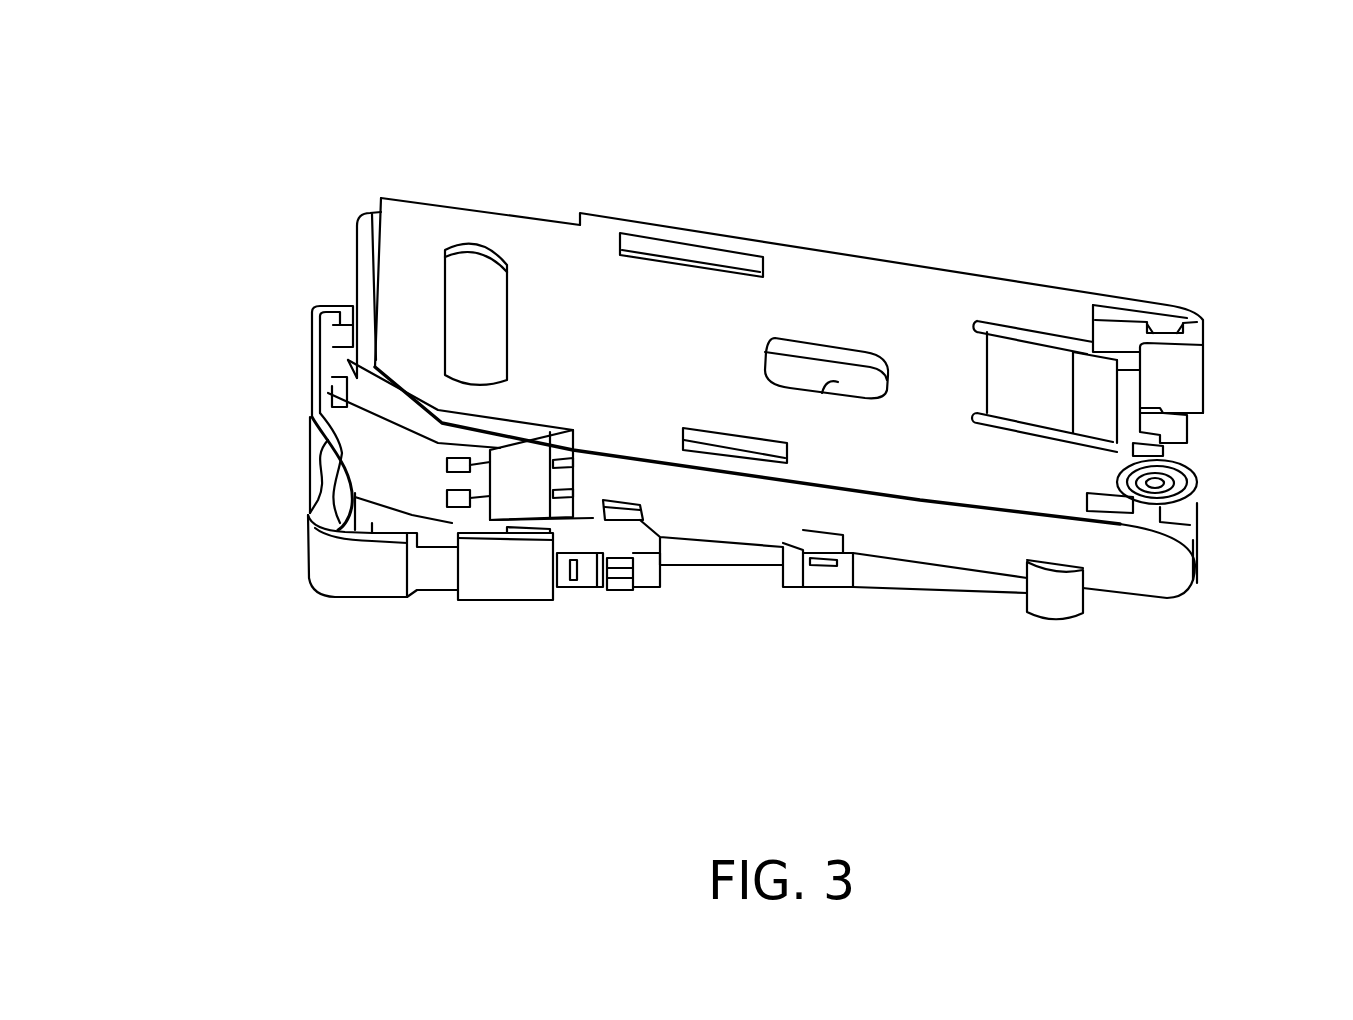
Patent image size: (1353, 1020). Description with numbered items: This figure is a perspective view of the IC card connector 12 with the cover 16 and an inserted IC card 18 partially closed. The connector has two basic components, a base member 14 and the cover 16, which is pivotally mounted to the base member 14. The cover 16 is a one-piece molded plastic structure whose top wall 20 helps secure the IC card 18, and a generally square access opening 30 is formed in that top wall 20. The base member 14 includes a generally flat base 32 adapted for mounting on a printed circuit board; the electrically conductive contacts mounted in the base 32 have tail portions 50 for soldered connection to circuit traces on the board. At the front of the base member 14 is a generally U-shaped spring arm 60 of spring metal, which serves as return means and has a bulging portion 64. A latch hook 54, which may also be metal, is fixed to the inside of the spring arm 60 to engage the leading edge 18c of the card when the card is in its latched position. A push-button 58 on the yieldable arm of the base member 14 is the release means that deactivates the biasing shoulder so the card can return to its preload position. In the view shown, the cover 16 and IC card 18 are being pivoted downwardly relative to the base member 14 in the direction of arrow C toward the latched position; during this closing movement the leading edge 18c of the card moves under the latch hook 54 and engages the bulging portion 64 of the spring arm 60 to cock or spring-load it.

The IC card connector 12 is at (1062, 178).
The base member 14 is at (737, 566).
The cover 16 is at (802, 248).
The IC card 18 is at (808, 367).
The leading edge 18c is at (353, 253).
The top wall 20 is at (538, 268).
The access opening 30 is at (862, 396).
The base 32 is at (597, 530).
The tail portions 50 is at (1185, 460).
The latch hook 54 is at (343, 360).
The push-button 58 is at (1195, 480).
The U-shaped spring arm 60 is at (317, 392).
The bulging portion 64 is at (343, 483).
The arrow C is at (410, 77).